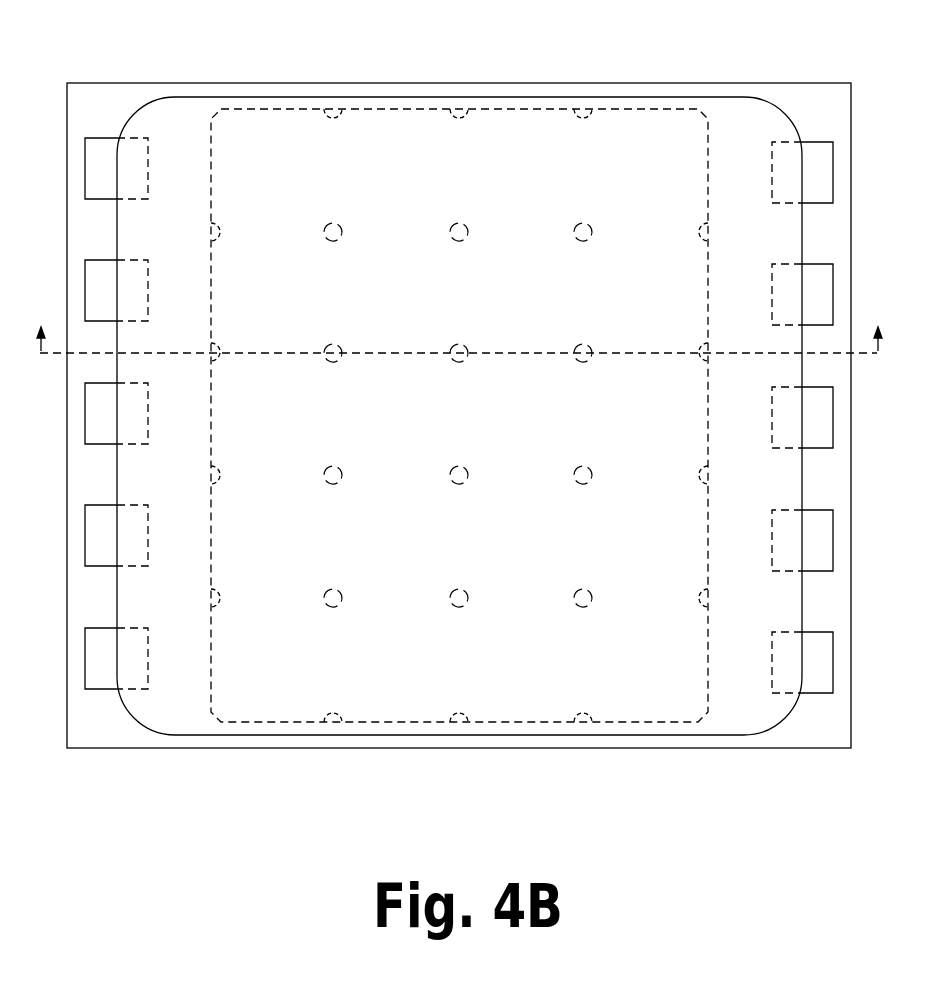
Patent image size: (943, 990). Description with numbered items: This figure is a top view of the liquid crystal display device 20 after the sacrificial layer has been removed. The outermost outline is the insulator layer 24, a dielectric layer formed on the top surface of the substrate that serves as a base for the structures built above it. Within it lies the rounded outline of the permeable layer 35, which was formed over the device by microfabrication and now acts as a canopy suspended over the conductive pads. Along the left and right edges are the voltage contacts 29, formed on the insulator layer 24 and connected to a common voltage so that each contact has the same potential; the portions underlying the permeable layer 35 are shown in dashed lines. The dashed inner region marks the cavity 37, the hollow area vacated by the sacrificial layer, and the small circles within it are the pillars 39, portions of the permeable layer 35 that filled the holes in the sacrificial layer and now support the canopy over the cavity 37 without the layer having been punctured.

The liquid crystal display (LCD) device 20 is at (290, 64).
The insulator layer 24 is at (387, 83).
The voltage contacts 29 is at (802, 143).
The permeable layer 35 is at (645, 97).
The cavity 37 is at (492, 109).
The pillars 39 is at (327, 225).